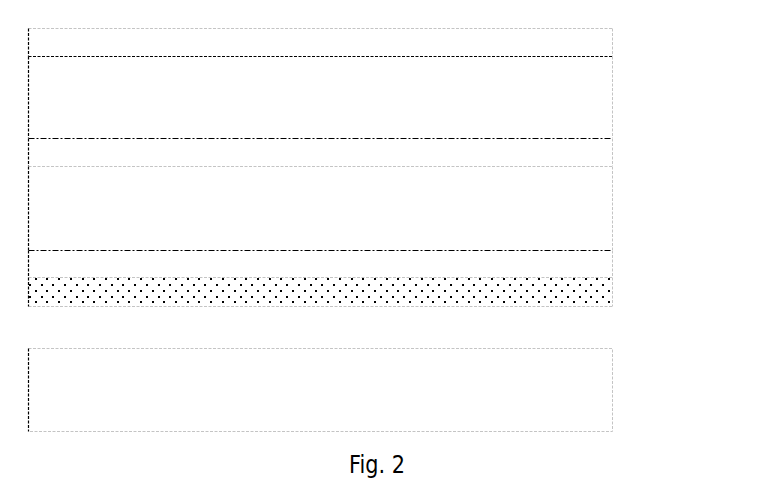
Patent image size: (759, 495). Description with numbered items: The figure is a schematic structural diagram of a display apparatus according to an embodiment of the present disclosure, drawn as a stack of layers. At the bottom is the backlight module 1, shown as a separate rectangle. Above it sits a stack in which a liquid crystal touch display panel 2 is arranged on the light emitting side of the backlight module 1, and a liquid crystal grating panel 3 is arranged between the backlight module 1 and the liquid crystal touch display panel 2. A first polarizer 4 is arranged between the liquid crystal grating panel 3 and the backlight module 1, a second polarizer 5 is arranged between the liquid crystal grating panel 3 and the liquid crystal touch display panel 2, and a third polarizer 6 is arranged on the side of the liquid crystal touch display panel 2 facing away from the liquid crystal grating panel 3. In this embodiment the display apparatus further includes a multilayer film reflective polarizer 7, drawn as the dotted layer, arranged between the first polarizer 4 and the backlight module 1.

The backlight module 1 is at (584, 388).
The liquid crystal touch display panel 2 is at (584, 88).
The liquid crystal grating panel 3 is at (566, 210).
The first polarizer 4 is at (583, 266).
The second polarizer 5 is at (583, 150).
The third polarizer 6 is at (594, 42).
The multilayer film reflective polarizer 7 is at (594, 286).